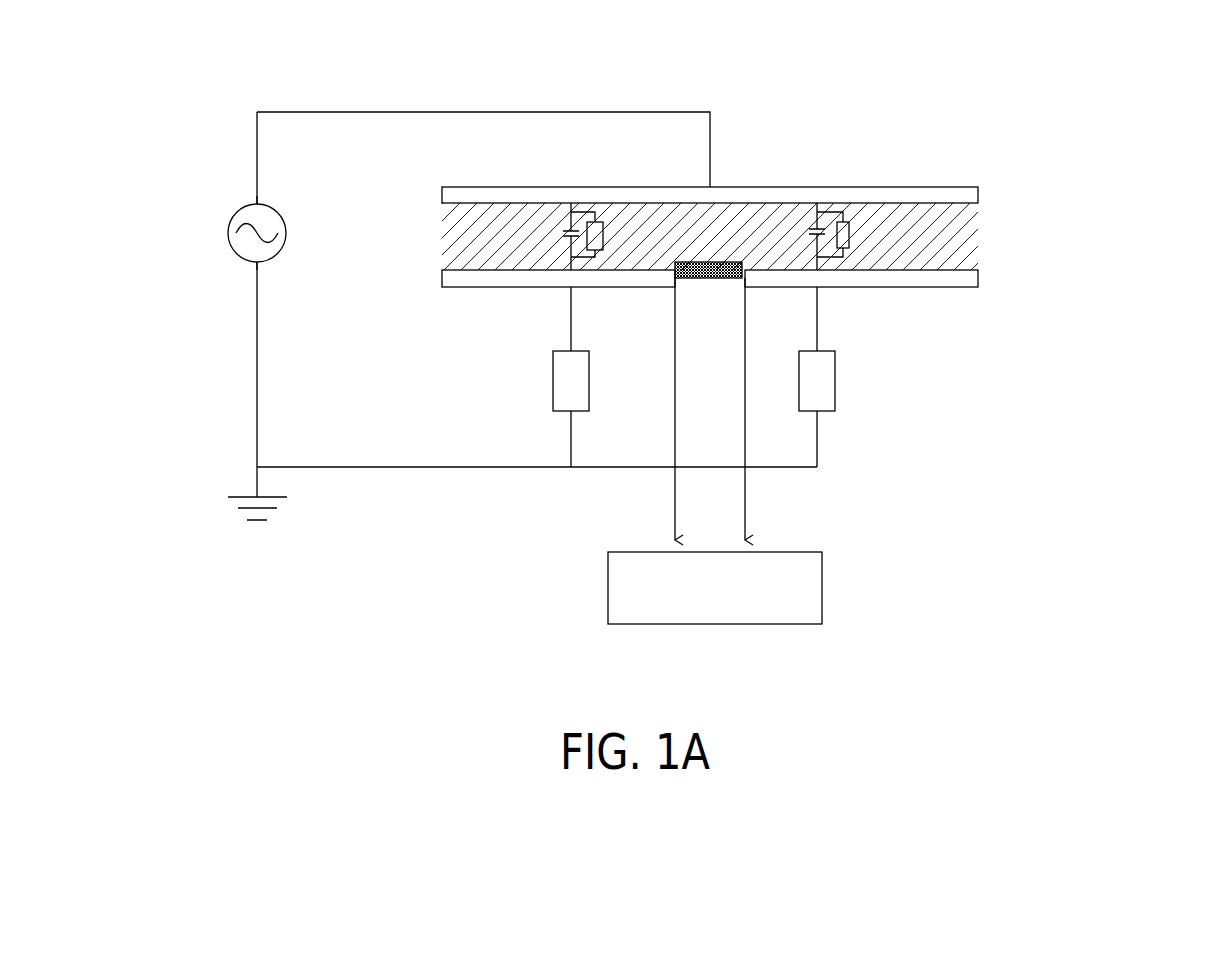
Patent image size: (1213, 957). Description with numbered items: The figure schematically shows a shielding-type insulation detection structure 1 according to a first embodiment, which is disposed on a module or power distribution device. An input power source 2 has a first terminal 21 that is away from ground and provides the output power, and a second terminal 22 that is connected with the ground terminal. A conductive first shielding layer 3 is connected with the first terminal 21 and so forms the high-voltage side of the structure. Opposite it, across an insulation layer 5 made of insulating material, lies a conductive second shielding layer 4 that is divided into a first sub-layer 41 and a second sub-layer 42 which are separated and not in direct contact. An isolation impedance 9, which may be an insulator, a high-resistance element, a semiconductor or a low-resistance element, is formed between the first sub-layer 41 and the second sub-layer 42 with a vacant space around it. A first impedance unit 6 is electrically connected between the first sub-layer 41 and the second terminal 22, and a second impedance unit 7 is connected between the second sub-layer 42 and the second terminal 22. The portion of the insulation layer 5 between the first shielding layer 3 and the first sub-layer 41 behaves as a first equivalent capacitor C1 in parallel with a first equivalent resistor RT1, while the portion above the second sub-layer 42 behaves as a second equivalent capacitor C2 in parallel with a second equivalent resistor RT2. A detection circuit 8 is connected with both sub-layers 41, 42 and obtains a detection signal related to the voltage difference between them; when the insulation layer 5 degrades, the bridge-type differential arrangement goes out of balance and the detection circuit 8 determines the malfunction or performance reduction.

The shielding-type insulation detection structure 1 is at (1151, 83).
The input power source 2 is at (228, 242).
The first terminal 21 is at (257, 200).
The second terminal 22 is at (257, 264).
The first shielding layer 3 is at (898, 189).
The second shielding layer 4 is at (1108, 237).
The first sub-layer 41 is at (477, 282).
The second sub-layer 42 is at (918, 278).
The insulation layer 5 is at (975, 221).
The first impedance unit 6 is at (580, 372).
The second impedance unit 7 is at (825, 372).
The detection circuit 8 is at (807, 550).
The isolation impedance 9 is at (700, 280).
The first equivalent capacitor C1 is at (554, 236).
The first equivalent resistor RT1 is at (613, 234).
The second equivalent capacitor C2 is at (800, 236).
The second equivalent resistor RT2 is at (858, 234).